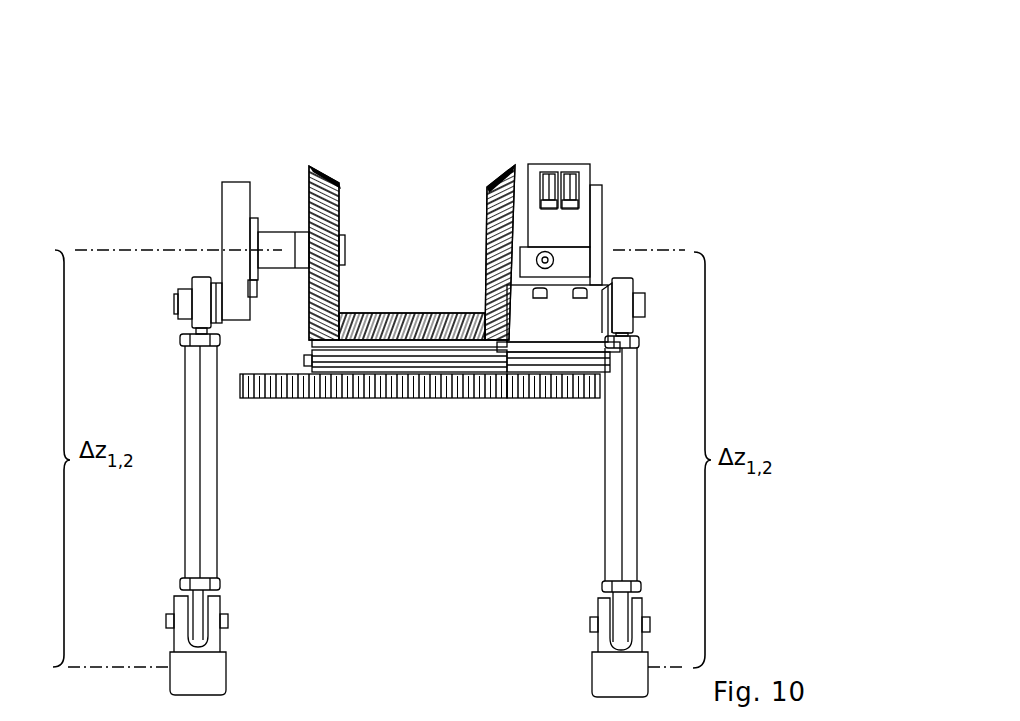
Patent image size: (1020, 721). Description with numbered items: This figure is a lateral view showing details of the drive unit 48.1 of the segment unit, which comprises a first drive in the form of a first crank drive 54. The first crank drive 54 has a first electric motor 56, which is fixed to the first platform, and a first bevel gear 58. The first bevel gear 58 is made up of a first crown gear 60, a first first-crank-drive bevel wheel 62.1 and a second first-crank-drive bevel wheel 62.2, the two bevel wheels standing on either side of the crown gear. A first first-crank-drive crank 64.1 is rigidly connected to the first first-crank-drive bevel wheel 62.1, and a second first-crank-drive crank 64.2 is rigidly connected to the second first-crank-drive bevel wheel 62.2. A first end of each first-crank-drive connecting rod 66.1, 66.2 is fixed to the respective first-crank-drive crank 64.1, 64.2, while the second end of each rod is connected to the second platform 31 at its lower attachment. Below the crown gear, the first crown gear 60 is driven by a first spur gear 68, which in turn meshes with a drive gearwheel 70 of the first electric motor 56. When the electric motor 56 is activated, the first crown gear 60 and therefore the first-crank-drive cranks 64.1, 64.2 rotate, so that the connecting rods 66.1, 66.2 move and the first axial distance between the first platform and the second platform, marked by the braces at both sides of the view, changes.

The clevis joint 31 is at (206, 676).
The drive unit 48.1 is at (473, 355).
The first crank drive 54 is at (706, 128).
The first electric motor 56 is at (570, 225).
The first bevel gear 58 is at (395, 185).
The first crown gear 60 is at (370, 318).
The first first-crank-drive bevel wheel 62.1 is at (500, 176).
The second first-crank-drive bevel wheel 62.2 is at (314, 170).
The first first-crank-drive crank 64.1 is at (600, 226).
The second first-crank-drive crank 64.2 is at (232, 224).
The first-crank-drive connecting rod 66.1 is at (612, 503).
The first-crank-drive connecting rod 66.2 is at (215, 530).
The first spur gear 68 is at (402, 388).
The drive gearwheel 70 is at (562, 395).